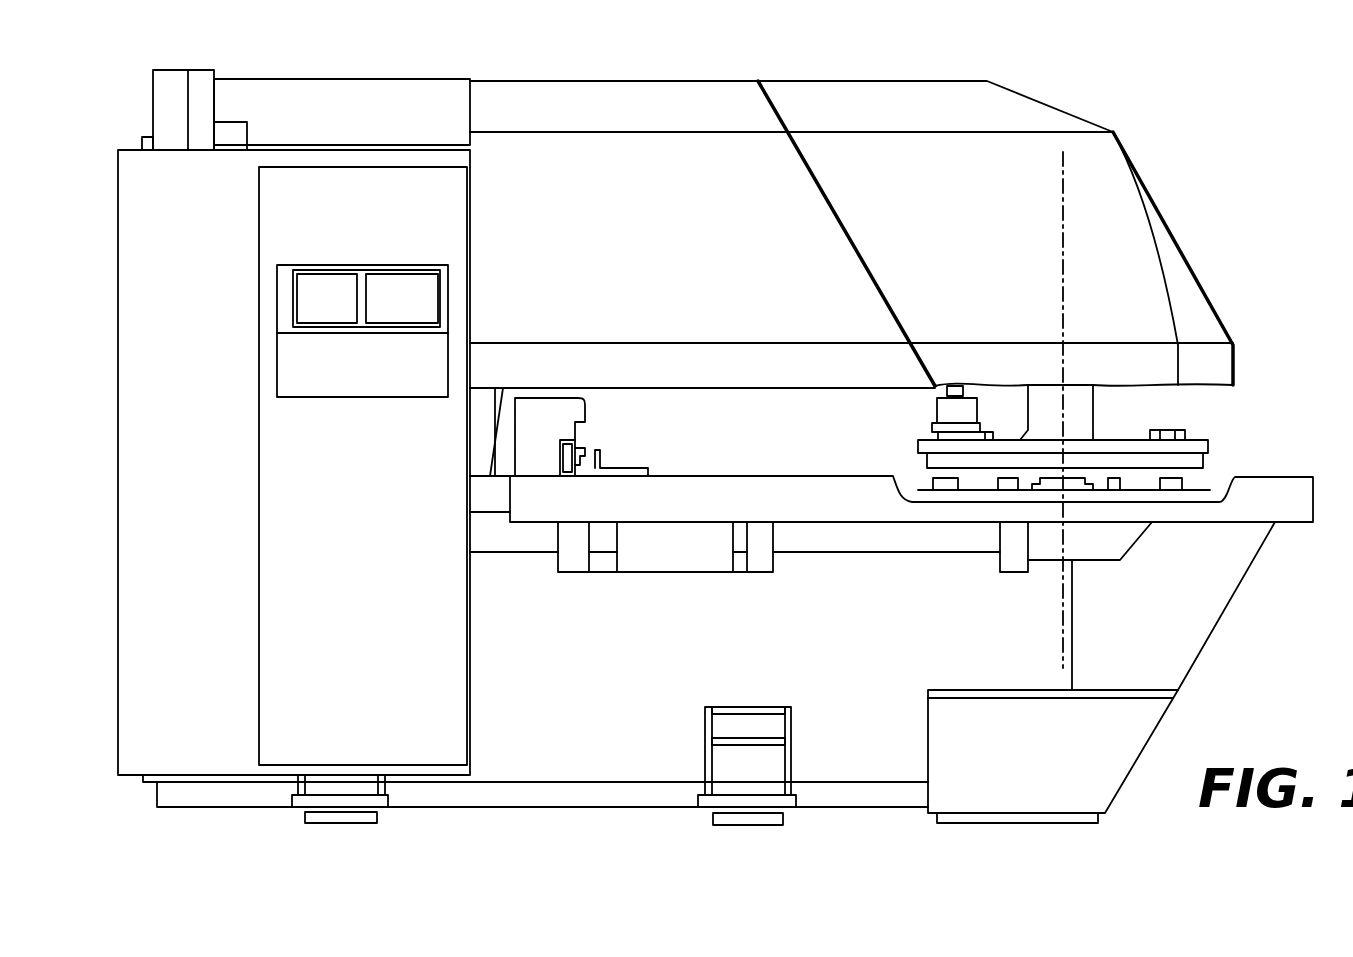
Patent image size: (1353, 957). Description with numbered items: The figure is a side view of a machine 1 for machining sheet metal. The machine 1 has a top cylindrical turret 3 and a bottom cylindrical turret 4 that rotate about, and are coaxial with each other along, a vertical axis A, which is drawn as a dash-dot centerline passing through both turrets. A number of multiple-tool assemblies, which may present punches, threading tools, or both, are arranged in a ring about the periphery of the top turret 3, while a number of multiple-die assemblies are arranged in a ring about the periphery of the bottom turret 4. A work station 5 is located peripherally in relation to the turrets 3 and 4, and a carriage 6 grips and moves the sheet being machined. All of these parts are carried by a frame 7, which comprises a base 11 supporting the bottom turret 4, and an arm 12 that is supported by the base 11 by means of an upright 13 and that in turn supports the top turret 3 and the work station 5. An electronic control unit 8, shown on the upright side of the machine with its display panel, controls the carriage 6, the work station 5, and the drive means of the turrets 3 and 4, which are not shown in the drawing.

The machine for machining sheet metal 1 is at (715, 453).
The top cylindrical turret 3 is at (1190, 447).
The bottom cylindrical turret 4 is at (1198, 497).
The work station 5 is at (910, 403).
The carriage 6 is at (584, 427).
The frame 7 is at (590, 812).
The electronic control unit 8 is at (326, 402).
The base 11 is at (833, 738).
The arm 12 is at (628, 112).
The upright 13 is at (340, 117).
The vertical axis A is at (1058, 222).